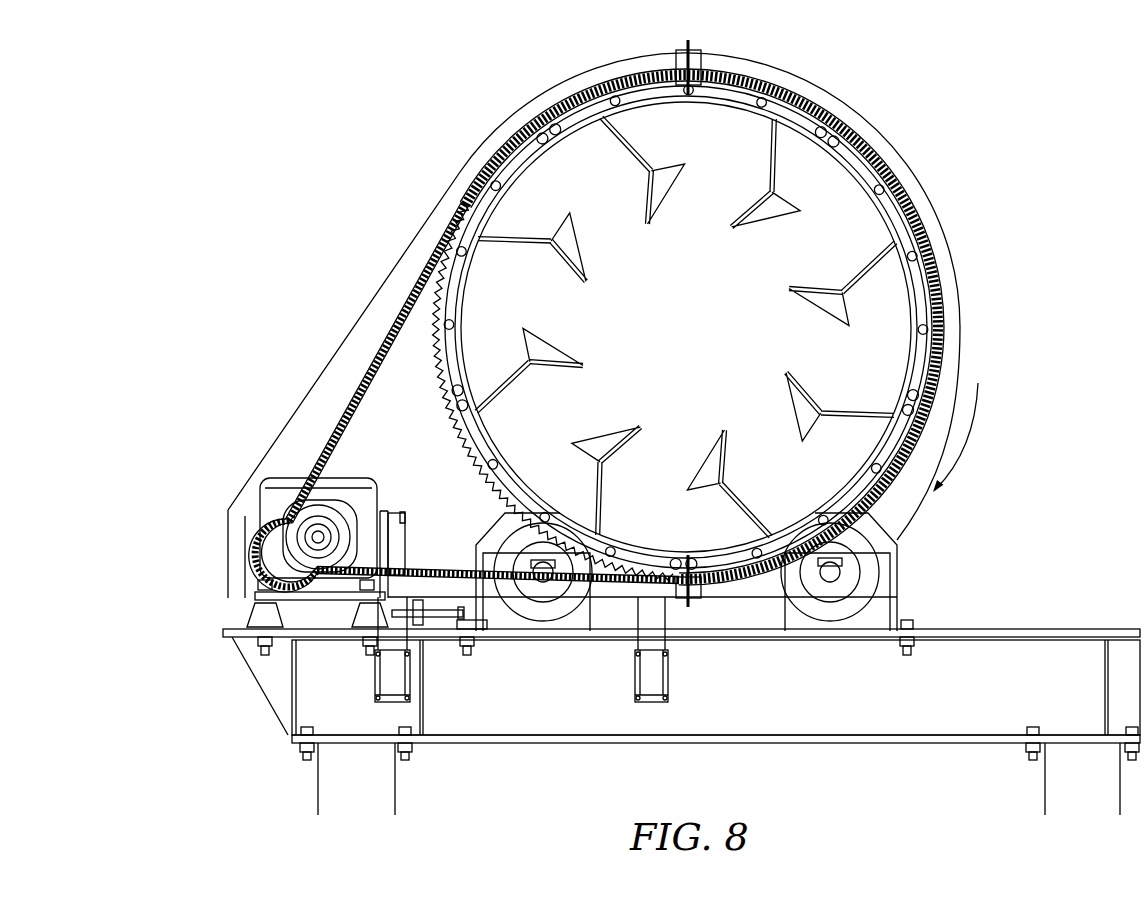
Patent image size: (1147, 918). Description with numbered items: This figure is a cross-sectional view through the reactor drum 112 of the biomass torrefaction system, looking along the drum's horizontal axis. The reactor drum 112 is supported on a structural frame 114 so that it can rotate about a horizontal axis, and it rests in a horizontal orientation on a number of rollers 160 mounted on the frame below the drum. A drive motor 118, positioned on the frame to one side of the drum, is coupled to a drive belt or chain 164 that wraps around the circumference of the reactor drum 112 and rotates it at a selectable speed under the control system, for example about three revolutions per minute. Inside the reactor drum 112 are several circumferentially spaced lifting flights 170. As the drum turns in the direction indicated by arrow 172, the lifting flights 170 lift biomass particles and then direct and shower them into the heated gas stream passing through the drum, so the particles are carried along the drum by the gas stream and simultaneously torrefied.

The reactor drum 112 is at (980, 112).
The structural frame 114 is at (940, 715).
The drive motor 118 is at (300, 533).
The rollers 160 is at (545, 610).
The drive belt or chain 164 is at (368, 370).
The lifting flights 170 is at (585, 287).
The arrow 172 is at (972, 448).